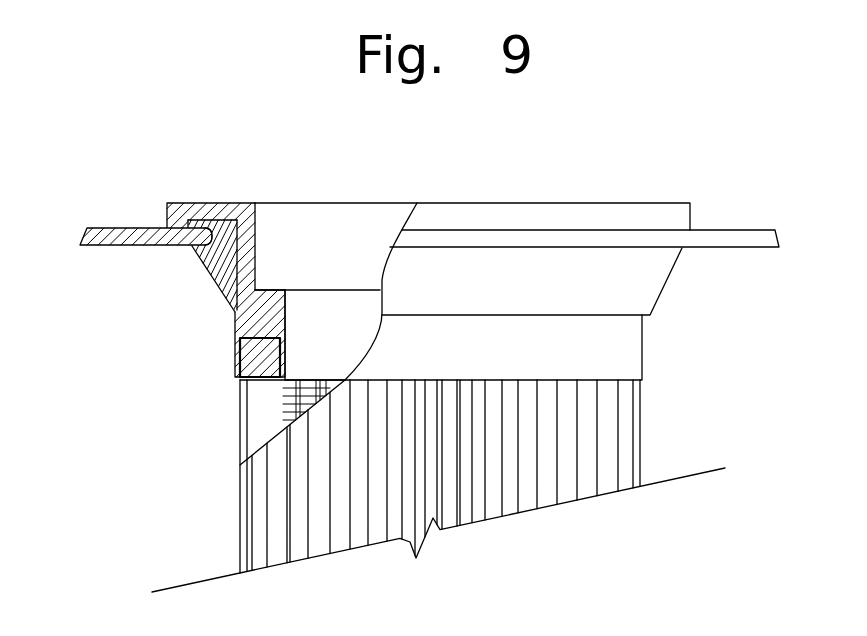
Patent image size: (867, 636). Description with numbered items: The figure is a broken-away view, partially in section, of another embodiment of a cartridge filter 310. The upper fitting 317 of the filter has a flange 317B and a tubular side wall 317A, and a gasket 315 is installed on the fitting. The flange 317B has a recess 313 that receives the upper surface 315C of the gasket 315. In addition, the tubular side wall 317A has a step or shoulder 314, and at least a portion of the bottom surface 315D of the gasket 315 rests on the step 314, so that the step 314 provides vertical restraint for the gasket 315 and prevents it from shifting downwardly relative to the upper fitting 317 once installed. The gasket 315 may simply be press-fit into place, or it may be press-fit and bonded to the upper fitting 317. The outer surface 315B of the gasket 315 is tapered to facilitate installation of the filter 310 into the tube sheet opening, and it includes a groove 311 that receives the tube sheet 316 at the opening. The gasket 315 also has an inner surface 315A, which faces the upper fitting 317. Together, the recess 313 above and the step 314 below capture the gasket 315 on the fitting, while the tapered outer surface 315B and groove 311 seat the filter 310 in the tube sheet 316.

The cartridge filter 310 is at (650, 165).
The groove 311 is at (193, 242).
The recess 313 is at (255, 268).
The step or shoulder 314 is at (285, 328).
The gasket 315 is at (672, 273).
The inner surface of the gasket 315A is at (257, 228).
The outer surface of the gasket 315B is at (207, 283).
The upper surface of the gasket 315C is at (199, 222).
The bottom surface of the gasket 315D is at (232, 312).
The tube sheet 316 is at (105, 228).
The upper fitting 317 is at (458, 203).
The tubular side wall of the upper fitting 317A is at (645, 358).
The flange of the upper fitting 317B is at (690, 219).